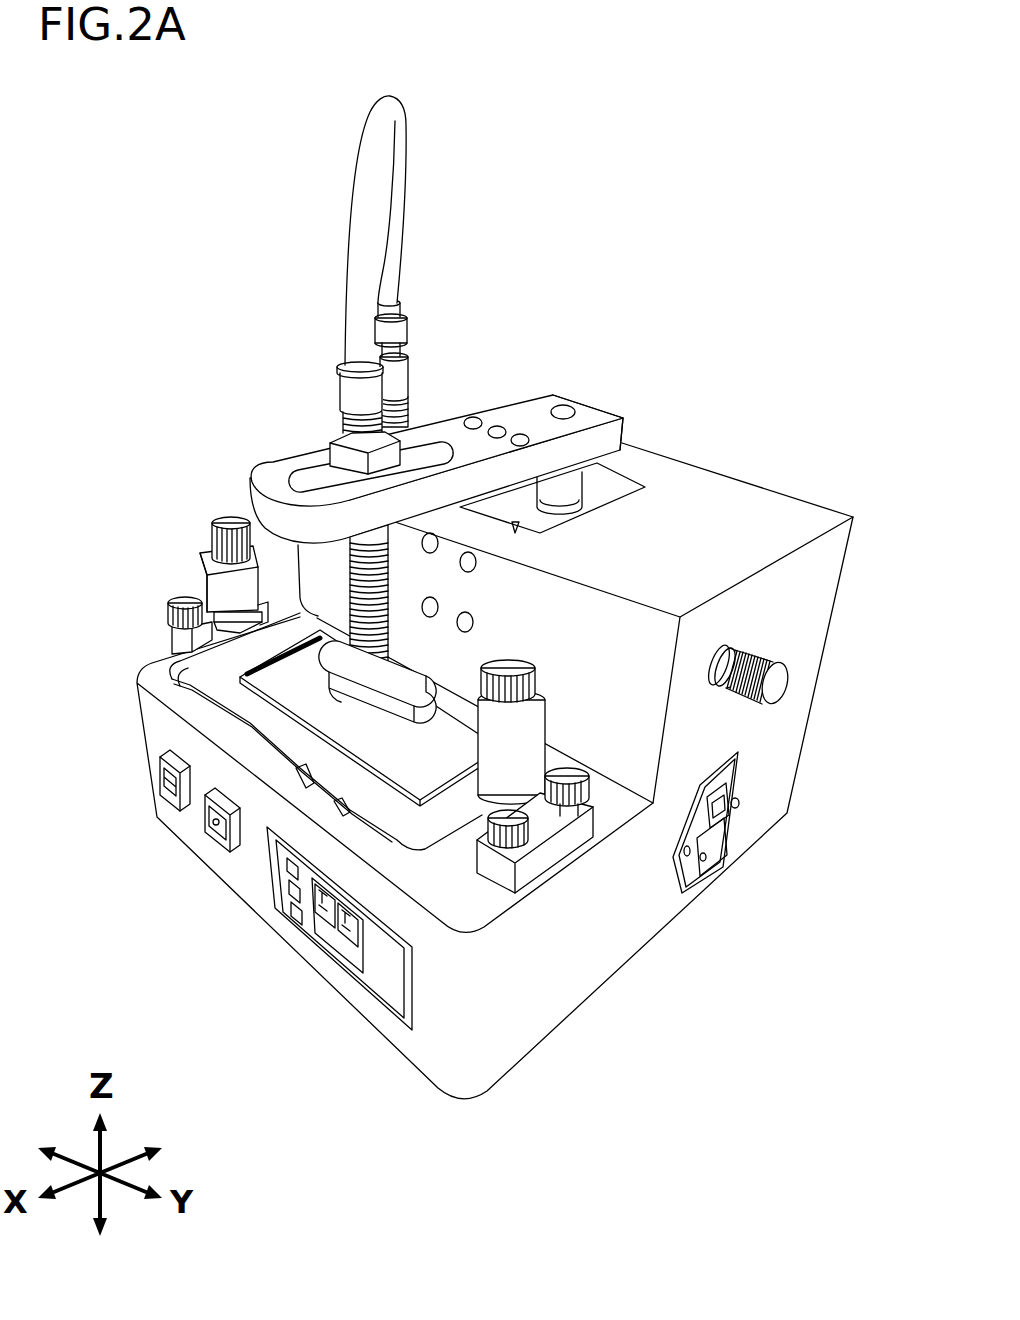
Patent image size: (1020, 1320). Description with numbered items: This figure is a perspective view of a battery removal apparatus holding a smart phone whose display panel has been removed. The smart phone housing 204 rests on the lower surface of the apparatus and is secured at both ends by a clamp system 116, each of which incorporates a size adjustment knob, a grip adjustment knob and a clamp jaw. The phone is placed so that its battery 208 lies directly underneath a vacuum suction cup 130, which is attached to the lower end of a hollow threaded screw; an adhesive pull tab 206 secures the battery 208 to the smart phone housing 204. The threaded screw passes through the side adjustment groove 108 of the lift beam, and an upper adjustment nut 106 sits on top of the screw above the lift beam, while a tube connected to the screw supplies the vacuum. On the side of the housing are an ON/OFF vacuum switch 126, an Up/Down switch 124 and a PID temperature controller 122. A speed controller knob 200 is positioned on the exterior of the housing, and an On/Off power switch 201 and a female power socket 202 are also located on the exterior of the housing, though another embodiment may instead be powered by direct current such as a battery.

The upper adjustment nut 106 is at (332, 437).
The side adjustment groove 108 is at (320, 478).
The clamp system 116 is at (196, 632).
The PID temperature controller 122 is at (340, 953).
The Up/Down switch 124 is at (214, 832).
The ON/OFF vacuum switch 126 is at (165, 790).
The vacuum suction cup 130 is at (443, 690).
The speed controller knob 200 is at (778, 682).
The On/Off power switch 201 is at (743, 797).
The female power socket 202 is at (712, 843).
The smart phone housing 204 is at (190, 672).
The adhesive pull tab 206 is at (258, 680).
The battery 208 is at (250, 692).